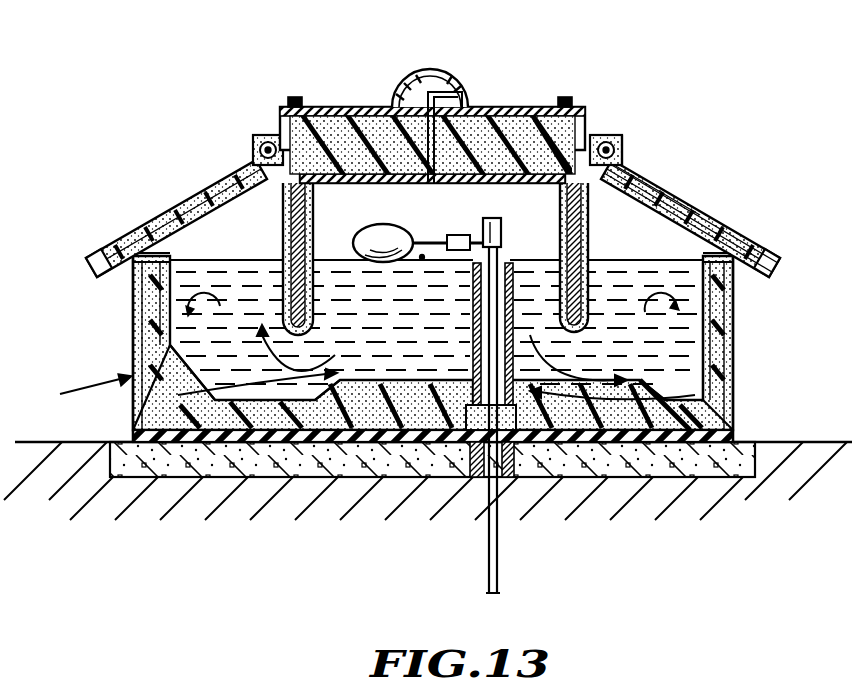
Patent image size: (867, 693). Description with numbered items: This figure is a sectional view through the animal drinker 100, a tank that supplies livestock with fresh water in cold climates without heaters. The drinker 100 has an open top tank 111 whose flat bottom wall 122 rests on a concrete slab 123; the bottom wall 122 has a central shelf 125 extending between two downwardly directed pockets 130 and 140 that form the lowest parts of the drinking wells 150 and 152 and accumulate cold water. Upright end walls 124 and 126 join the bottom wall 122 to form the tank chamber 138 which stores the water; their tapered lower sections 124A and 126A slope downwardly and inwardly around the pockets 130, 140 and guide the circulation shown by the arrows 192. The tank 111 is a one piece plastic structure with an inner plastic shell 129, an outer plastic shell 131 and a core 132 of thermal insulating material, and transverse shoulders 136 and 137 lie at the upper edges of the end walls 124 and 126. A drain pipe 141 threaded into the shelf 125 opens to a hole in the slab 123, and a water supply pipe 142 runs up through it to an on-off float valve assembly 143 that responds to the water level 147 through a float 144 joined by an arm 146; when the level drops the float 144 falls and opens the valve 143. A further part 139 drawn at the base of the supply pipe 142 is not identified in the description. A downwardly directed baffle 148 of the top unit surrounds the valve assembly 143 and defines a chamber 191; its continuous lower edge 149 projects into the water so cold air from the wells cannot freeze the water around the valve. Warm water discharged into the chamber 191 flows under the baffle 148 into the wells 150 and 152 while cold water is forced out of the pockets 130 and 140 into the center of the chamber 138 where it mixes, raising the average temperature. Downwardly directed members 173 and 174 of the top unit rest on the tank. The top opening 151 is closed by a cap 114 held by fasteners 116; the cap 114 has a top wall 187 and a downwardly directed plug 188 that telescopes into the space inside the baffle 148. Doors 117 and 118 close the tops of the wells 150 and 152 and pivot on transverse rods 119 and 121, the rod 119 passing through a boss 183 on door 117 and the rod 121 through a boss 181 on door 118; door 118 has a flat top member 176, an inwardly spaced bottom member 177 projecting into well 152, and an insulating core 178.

The animal drinker 100 is at (428, 305).
The tank 111 is at (374, 349).
The cap 114 is at (500, 104).
The fasteners 116 is at (295, 97).
The door 117 is at (230, 181).
The door 118 is at (732, 228).
The transverse rod 119 is at (272, 136).
The transverse rod 121 is at (612, 152).
The bottom wall 122 is at (275, 432).
The concrete slab 123 is at (693, 478).
The end wall 124 is at (132, 320).
The tapered lower section 124A is at (150, 357).
The central shelf 125 is at (392, 440).
The end wall 126 is at (735, 325).
The tapered lower section 126A is at (648, 433).
The inner plastic shell 129 is at (705, 348).
The pocket 130 is at (138, 412).
The outer plastic shell 131 is at (732, 424).
The core 132 is at (715, 365).
The transverse shoulder 136 is at (132, 286).
The transverse shoulder 137 is at (735, 292).
The tank chamber 138 is at (414, 374).
The anchor 139 is at (530, 434).
The pocket 140 is at (717, 393).
The drain pipe 141 is at (473, 280).
The water supply pipe 142 is at (498, 578).
The float valve assembly 143 is at (470, 235).
The float 144 is at (381, 236).
The arm 146 is at (447, 240).
The water level 147 is at (421, 258).
The baffle 148 is at (286, 300).
The lower edge of baffle 149 is at (578, 323).
The drinking well 150 is at (262, 249).
The top opening 151 is at (593, 138).
The drinking well 152 is at (630, 248).
The downwardly directed member 173 is at (138, 245).
The downwardly directed member 174 is at (755, 249).
The top member 176 is at (706, 218).
The bottom member 177 is at (626, 187).
The core 178 is at (652, 200).
The boss 181 is at (613, 130).
The boss 183 is at (250, 146).
The top wall 187 is at (373, 104).
The plug 188 is at (435, 259).
The chamber 191 is at (546, 221).
The water circulation arrows 192 is at (665, 372).